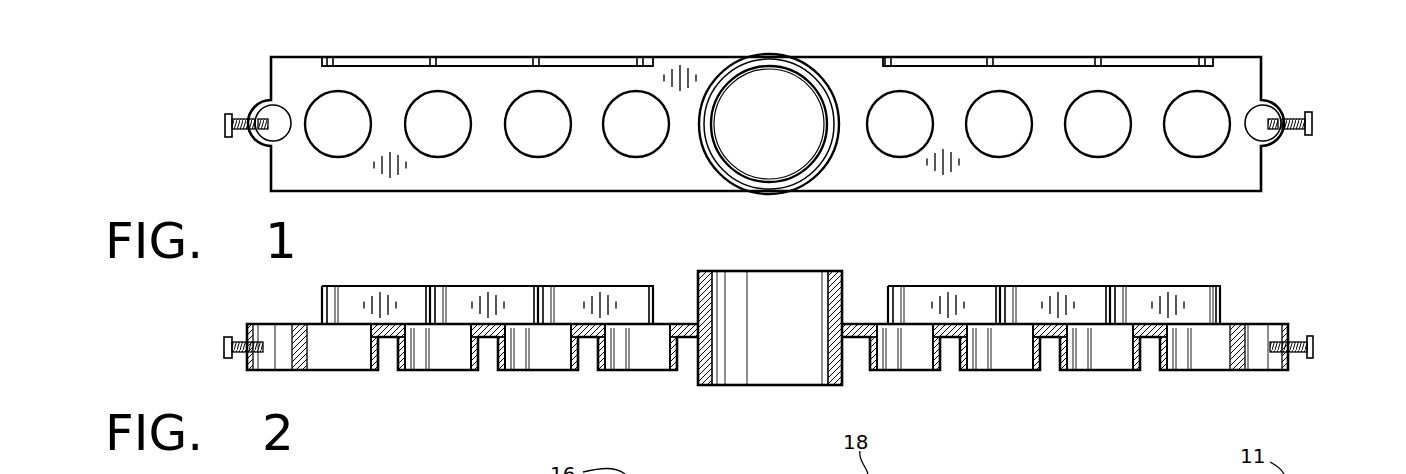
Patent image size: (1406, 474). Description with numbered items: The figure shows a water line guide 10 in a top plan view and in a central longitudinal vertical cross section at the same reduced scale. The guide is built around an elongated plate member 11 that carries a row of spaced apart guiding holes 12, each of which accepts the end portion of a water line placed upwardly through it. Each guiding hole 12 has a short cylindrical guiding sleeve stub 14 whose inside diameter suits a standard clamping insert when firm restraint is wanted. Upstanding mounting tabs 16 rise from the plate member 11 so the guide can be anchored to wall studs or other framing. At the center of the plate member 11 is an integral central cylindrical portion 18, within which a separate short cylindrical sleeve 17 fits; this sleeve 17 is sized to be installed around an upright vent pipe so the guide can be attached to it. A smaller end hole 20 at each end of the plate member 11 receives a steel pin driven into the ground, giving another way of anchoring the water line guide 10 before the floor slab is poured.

In FIG. 1, the water line guide 10 is at (1305, 82).
In FIG. 2, the water line guide 10 is at (1322, 310).
In FIG. 1, the plate member 11 is at (1250, 84).
In FIG. 2, the plate member 11 is at (767, 347).
In FIG. 1, the guiding holes 12 is at (566, 102).
In FIG. 2, the cylindrical guiding sleeve stub 14 is at (1043, 356).
In FIG. 1, the mounting tabs 16 is at (492, 63).
In FIG. 2, the mounting tabs 16 is at (525, 286).
In FIG. 1, the cylindrical sleeve 17 is at (770, 62).
In FIG. 2, the cylindrical sleeve 17 is at (810, 271).
In FIG. 1, the central cylindrical portion 18 is at (838, 107).
In FIG. 1, the end hole 20 is at (263, 148).
In FIG. 2, the end hole 20 is at (768, 347).